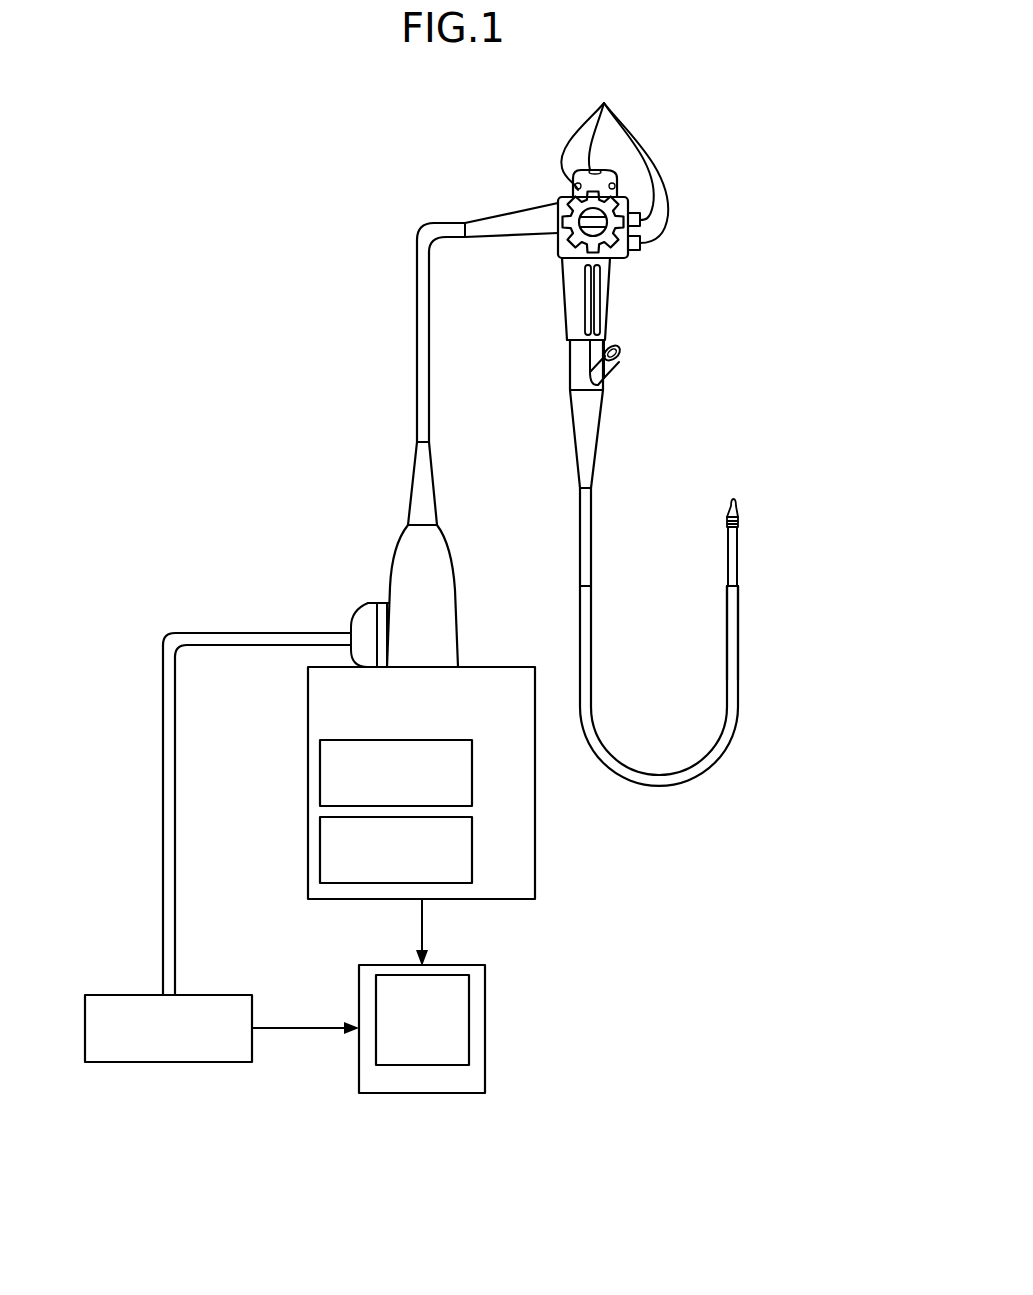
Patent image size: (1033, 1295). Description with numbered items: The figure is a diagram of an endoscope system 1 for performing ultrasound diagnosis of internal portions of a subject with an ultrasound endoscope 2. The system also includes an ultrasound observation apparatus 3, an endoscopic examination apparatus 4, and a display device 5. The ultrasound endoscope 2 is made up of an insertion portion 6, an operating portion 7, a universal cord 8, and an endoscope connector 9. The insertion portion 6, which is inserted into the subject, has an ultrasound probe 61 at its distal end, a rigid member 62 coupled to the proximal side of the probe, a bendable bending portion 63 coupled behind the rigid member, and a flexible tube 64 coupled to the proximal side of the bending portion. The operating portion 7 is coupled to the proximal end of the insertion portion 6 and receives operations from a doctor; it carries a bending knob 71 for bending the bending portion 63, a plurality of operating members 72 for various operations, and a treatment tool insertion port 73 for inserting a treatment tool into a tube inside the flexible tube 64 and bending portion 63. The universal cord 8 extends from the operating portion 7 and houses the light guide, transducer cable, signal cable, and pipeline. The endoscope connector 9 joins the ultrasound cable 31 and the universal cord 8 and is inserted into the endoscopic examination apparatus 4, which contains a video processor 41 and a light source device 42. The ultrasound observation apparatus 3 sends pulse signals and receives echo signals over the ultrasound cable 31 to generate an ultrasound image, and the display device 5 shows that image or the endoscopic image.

The endoscope system 1 is at (261, 160).
The ultrasound endoscope 2 is at (719, 172).
The ultrasound observation apparatus 3 is at (168, 1063).
The endoscopic examination apparatus 4 is at (493, 667).
The display device 5 is at (486, 1028).
The insertion portion 6 is at (650, 770).
The operating portion 7 is at (604, 283).
The universal cord 8 is at (425, 232).
The endoscope connector 9 is at (432, 562).
The ultrasound cable 31 is at (163, 774).
The video processor 41 is at (474, 768).
The light source device 42 is at (474, 847).
The ultrasound probe 61 is at (734, 496).
The rigid member 62 is at (737, 520).
The bending portion 63 is at (737, 552).
The flexible tube 64 is at (737, 677).
The bending knob 71 is at (612, 263).
The operating members 72 is at (614, 161).
The treatment tool insertion port 73 is at (612, 370).